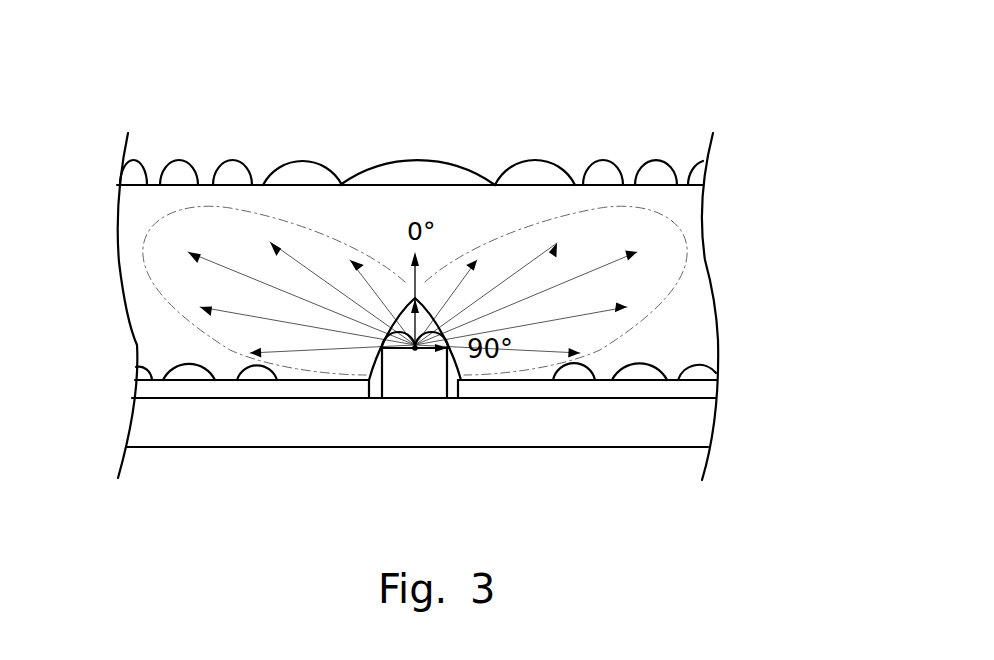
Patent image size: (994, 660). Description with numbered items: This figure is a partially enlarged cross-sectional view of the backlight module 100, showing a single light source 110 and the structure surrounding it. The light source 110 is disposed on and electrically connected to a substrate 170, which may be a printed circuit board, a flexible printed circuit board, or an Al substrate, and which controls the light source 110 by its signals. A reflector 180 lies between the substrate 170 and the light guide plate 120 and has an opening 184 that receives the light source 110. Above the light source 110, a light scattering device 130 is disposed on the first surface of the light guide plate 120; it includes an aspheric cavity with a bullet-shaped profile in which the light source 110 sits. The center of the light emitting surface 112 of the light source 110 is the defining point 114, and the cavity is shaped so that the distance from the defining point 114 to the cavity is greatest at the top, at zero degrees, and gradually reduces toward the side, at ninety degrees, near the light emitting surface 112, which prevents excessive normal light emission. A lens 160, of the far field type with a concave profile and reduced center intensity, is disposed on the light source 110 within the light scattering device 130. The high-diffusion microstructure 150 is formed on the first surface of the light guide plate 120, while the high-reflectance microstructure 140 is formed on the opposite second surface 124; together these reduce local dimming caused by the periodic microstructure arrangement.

The backlight module 100 is at (172, 97).
The light source 110 is at (405, 387).
The light emitting surface 112 is at (400, 340).
The defining point 114 is at (417, 335).
The light guide plate 120 is at (686, 208).
The second surface 124 is at (631, 186).
The light scattering device 130 is at (432, 298).
The high-reflectance microstructure 140 is at (393, 172).
The high-diffusion microstructure 150 is at (190, 372).
The lens 160 is at (401, 342).
The substrate 170 is at (695, 420).
The reflector 180 is at (710, 390).
The opening 184 is at (455, 388).